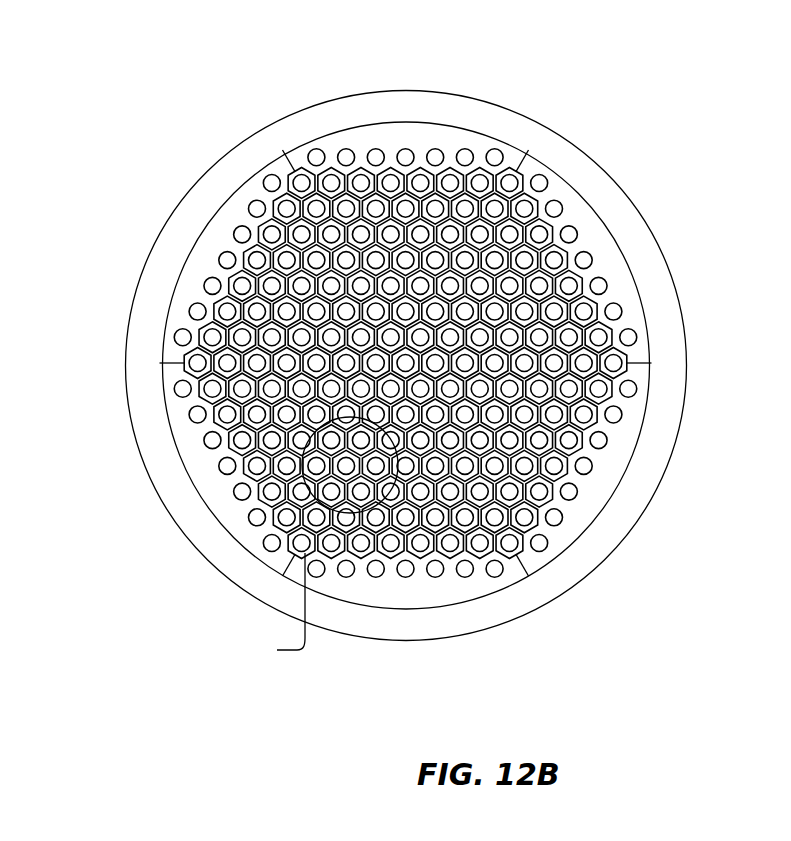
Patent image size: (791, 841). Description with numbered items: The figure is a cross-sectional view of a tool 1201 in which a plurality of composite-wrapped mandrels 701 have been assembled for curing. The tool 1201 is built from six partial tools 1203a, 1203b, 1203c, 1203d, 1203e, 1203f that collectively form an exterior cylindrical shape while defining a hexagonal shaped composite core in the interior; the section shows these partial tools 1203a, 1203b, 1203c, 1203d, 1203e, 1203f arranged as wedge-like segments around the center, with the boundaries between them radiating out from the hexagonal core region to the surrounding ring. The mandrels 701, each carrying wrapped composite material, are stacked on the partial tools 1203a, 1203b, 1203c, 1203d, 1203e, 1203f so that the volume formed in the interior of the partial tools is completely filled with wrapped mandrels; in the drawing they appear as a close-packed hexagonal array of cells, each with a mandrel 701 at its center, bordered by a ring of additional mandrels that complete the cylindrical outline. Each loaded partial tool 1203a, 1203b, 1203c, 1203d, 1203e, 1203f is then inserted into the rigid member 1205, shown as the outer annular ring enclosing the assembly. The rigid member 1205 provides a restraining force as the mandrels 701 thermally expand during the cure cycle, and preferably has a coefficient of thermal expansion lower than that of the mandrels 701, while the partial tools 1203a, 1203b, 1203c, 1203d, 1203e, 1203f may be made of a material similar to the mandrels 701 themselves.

The tool 1201 is at (203, 79).
The rigid member 1205 is at (317, 117).
The mandrel 701 is at (547, 207).
The partial tool 1203a is at (413, 130).
The partial tool 1203b is at (598, 237).
The partial tool 1203c is at (600, 472).
The partial tool 1203d is at (443, 590).
The partial tool 1203e is at (205, 470).
The partial tool 1203f is at (190, 271).